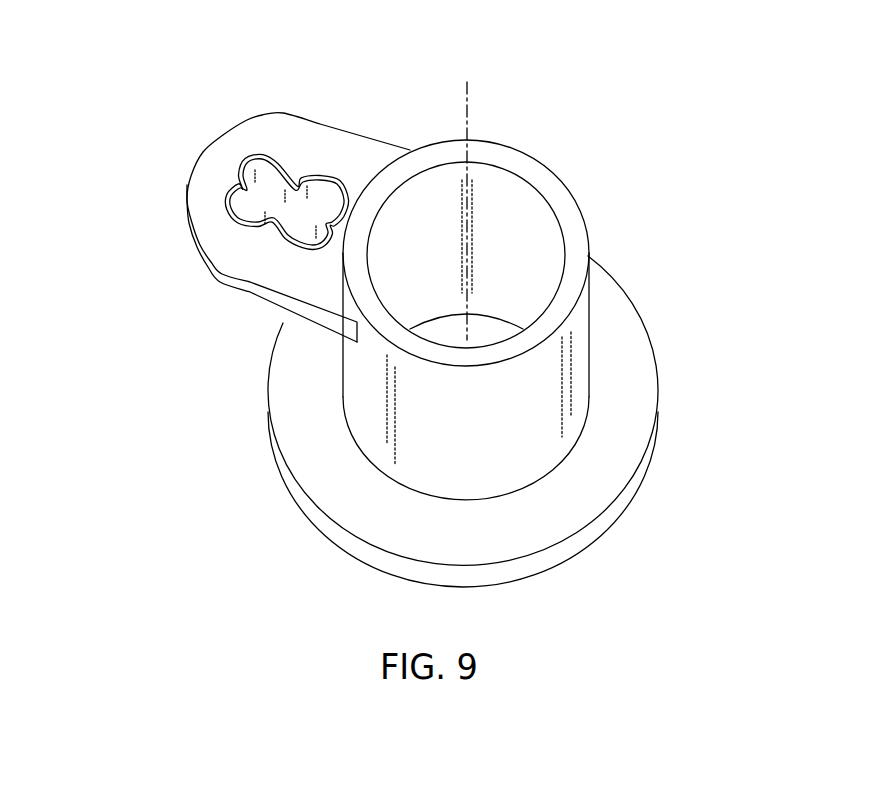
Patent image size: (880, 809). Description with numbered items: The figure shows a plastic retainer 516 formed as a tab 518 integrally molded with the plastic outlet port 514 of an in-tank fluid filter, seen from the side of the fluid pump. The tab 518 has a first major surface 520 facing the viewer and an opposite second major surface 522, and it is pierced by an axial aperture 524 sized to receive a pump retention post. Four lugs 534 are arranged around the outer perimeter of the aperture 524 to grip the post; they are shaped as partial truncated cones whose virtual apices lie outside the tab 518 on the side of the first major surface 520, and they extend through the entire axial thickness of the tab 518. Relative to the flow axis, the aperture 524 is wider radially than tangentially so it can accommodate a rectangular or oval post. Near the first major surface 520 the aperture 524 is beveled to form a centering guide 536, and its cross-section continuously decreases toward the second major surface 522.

The plastic outlet port 514 is at (582, 310).
The plastic retainer 516 is at (178, 373).
The tab 518 is at (217, 208).
The first major surface 520 is at (380, 154).
The second major surface 522 is at (318, 290).
The axial aperture 524 is at (246, 180).
The lugs 534 is at (297, 192).
The centering guide 536 is at (260, 159).